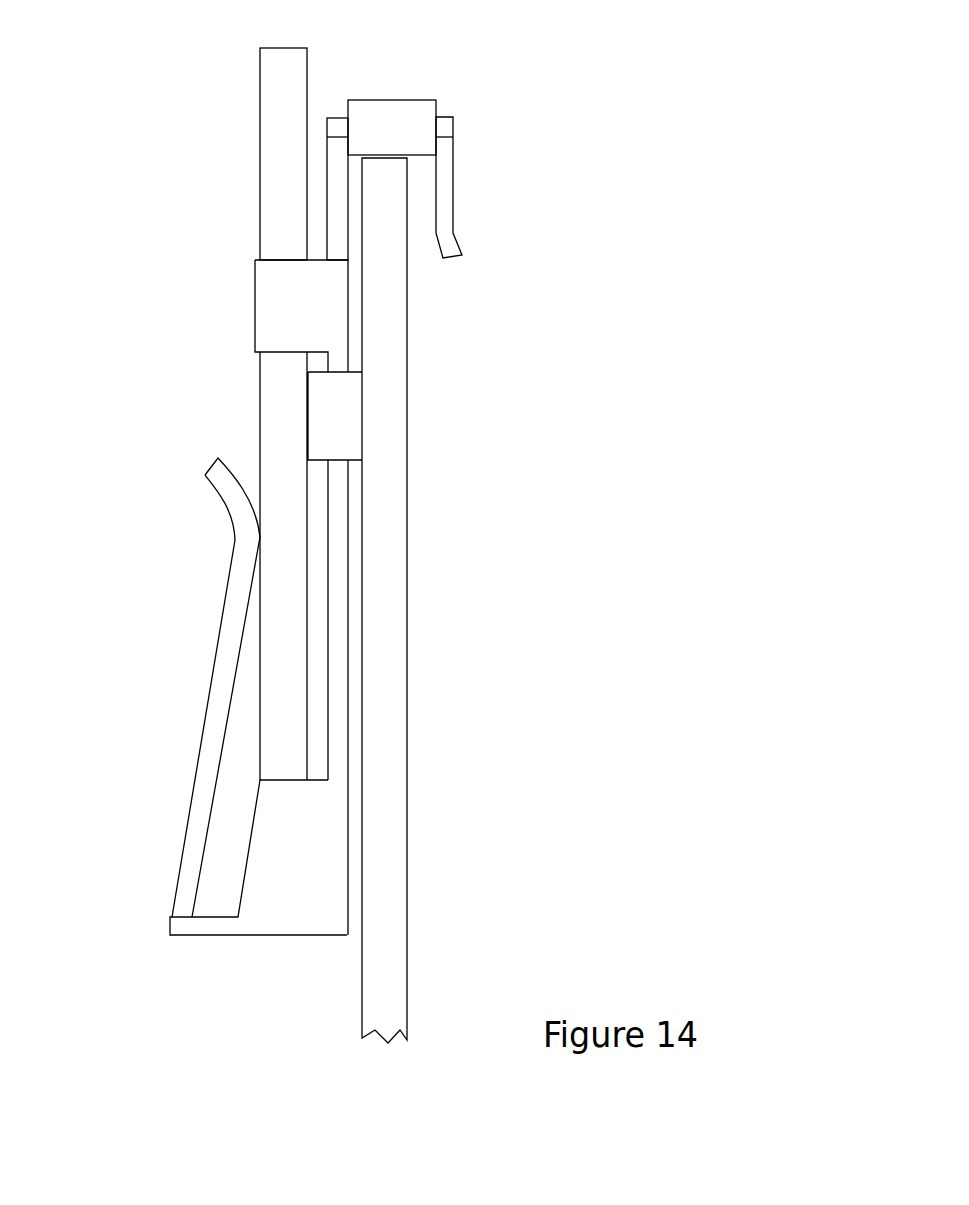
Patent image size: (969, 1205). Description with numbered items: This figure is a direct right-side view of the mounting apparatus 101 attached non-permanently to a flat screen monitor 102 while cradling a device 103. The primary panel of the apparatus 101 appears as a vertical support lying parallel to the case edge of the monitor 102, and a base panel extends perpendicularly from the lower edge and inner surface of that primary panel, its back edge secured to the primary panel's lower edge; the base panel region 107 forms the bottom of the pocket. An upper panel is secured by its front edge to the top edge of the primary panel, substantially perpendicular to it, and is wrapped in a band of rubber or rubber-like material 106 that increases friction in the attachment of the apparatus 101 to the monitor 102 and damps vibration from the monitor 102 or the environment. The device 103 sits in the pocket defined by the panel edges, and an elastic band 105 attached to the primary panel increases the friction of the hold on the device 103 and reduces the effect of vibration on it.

The mounting apparatus 101 is at (218, 710).
The flat screen monitor 102 is at (388, 822).
The device 103 is at (280, 215).
The elastic band 105 is at (342, 410).
The elastic band 106 is at (408, 128).
The base plate 107 is at (302, 913).